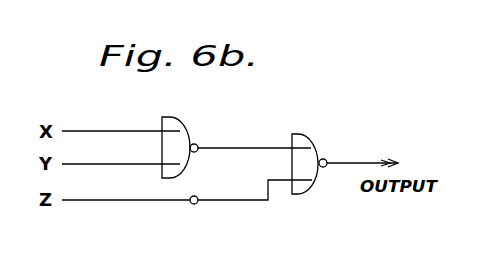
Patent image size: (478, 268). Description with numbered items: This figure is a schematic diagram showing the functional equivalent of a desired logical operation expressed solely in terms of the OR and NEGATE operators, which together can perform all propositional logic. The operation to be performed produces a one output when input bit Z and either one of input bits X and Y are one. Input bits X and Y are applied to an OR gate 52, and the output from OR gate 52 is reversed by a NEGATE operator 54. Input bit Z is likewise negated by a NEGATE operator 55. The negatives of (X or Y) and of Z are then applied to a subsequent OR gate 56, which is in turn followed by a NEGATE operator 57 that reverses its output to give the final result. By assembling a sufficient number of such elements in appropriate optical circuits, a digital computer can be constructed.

The OR gate 52 is at (173, 118).
The NEGATE operator 54 is at (197, 145).
The NEGATE operator 55 is at (194, 204).
The OR gate 56 is at (302, 135).
The NEGATE operator 57 is at (327, 158).